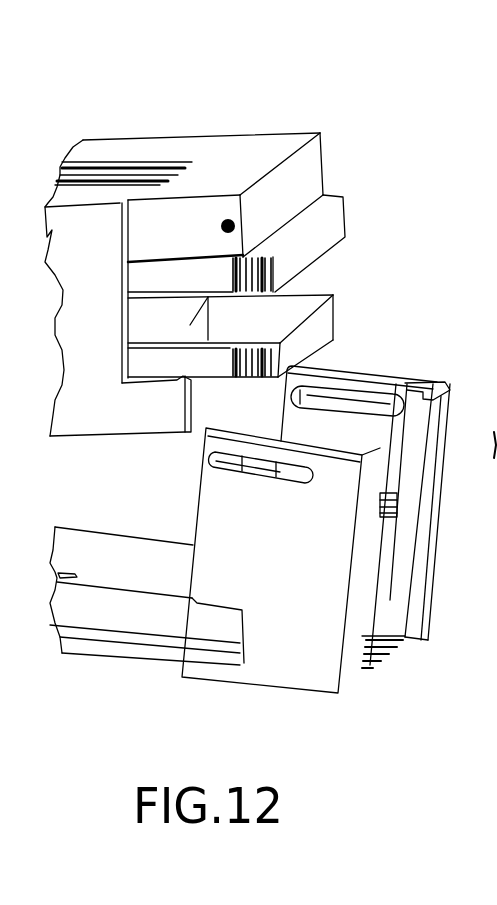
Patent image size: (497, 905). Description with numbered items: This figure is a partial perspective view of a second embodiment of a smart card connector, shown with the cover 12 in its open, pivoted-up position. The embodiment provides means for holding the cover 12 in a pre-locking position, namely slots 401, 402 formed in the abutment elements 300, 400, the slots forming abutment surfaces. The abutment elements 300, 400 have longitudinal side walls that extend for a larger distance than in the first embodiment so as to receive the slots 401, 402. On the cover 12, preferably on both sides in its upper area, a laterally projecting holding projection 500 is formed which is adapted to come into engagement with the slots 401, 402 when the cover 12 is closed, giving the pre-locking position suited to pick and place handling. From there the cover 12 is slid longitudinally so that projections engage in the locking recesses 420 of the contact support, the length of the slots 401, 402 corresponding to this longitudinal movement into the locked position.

The cover 12 is at (110, 124).
The holding projection 500 is at (226, 218).
The slot 401 is at (354, 395).
The abutment element 300 is at (428, 372).
The slot 402 is at (210, 460).
The abutment element 400 is at (376, 533).
The locking recess 420 is at (240, 628).